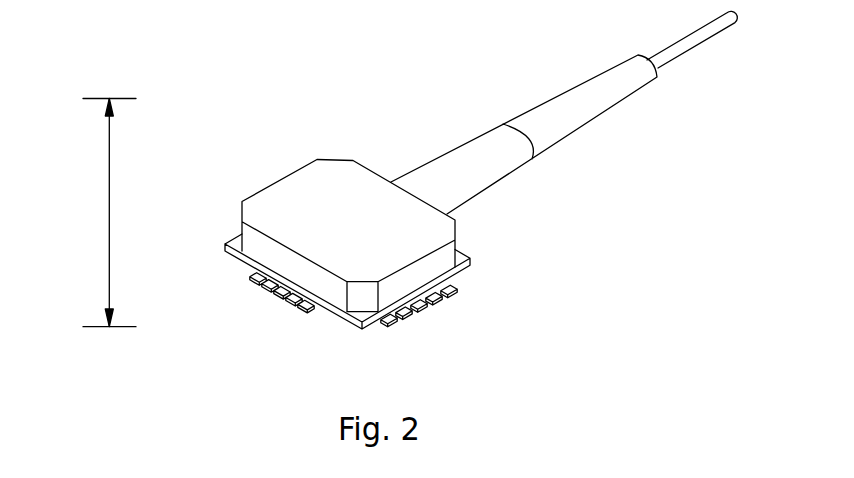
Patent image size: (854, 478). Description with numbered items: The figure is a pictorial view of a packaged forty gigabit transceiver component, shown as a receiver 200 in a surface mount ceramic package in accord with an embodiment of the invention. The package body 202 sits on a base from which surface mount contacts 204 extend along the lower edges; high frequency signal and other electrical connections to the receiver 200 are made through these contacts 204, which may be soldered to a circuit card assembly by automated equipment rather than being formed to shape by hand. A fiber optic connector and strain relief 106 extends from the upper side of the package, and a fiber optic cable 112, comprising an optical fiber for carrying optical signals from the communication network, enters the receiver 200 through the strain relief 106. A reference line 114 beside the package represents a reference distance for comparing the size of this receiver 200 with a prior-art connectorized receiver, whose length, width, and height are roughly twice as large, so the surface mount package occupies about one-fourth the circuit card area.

The 40 G receiver 200 is at (233, 43).
The housing / package 202 is at (279, 181).
The surface mount contacts 204 is at (457, 288).
The fiber optic connector and strain relief 106 is at (465, 139).
The fiber optic cable 112 is at (697, 30).
The reference line 114 is at (109, 287).